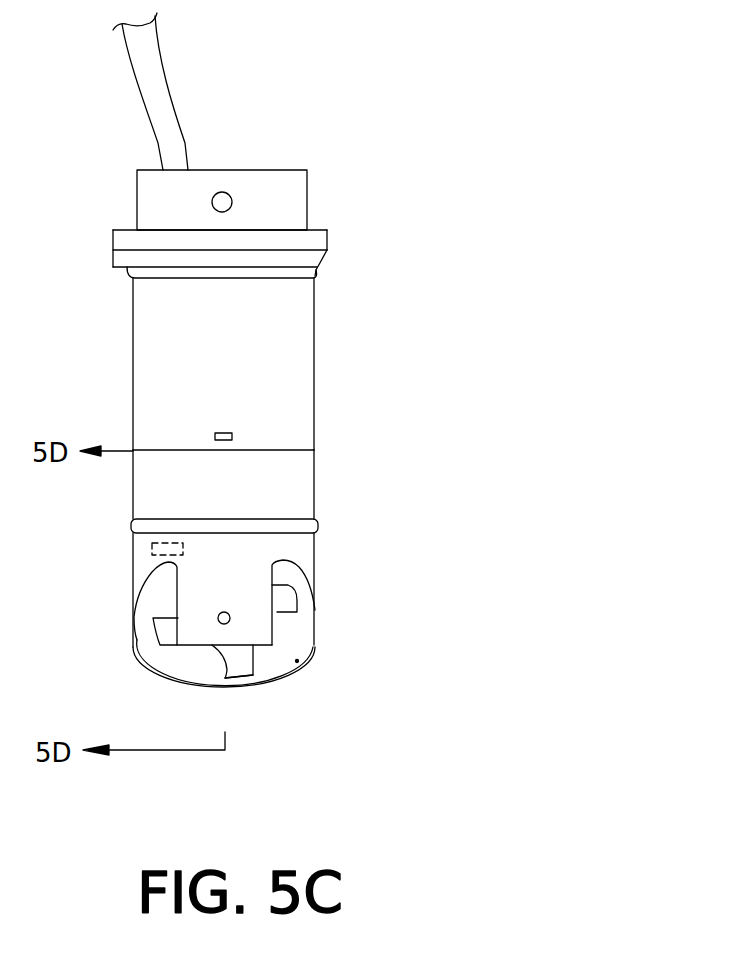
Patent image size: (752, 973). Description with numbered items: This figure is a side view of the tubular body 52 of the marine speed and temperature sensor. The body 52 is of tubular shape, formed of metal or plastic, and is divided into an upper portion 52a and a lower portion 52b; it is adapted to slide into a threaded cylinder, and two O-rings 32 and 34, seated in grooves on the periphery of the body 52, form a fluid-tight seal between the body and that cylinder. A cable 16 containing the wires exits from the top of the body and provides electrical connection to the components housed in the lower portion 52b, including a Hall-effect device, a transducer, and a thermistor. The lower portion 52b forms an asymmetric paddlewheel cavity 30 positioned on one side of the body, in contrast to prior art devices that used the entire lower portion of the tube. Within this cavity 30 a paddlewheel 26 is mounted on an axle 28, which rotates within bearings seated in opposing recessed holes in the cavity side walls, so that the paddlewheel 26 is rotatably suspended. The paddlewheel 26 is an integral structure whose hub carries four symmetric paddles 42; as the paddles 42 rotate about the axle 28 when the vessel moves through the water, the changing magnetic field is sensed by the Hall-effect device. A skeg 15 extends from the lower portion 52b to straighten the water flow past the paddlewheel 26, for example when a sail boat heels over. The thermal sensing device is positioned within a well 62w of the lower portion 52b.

The cable 16 is at (172, 73).
The tubular body 52 is at (352, 190).
The O-ring 32 is at (315, 273).
The upper portion 52a is at (314, 393).
The lower portion 52b is at (314, 482).
The O-ring 34 is at (133, 528).
The well 62w is at (152, 550).
The asymmetric paddlewheel cavity 30 is at (297, 582).
The axle 28 is at (229, 621).
The skeg 15 is at (297, 661).
The paddlewheel 26 is at (263, 673).
The paddles 42 is at (239, 678).